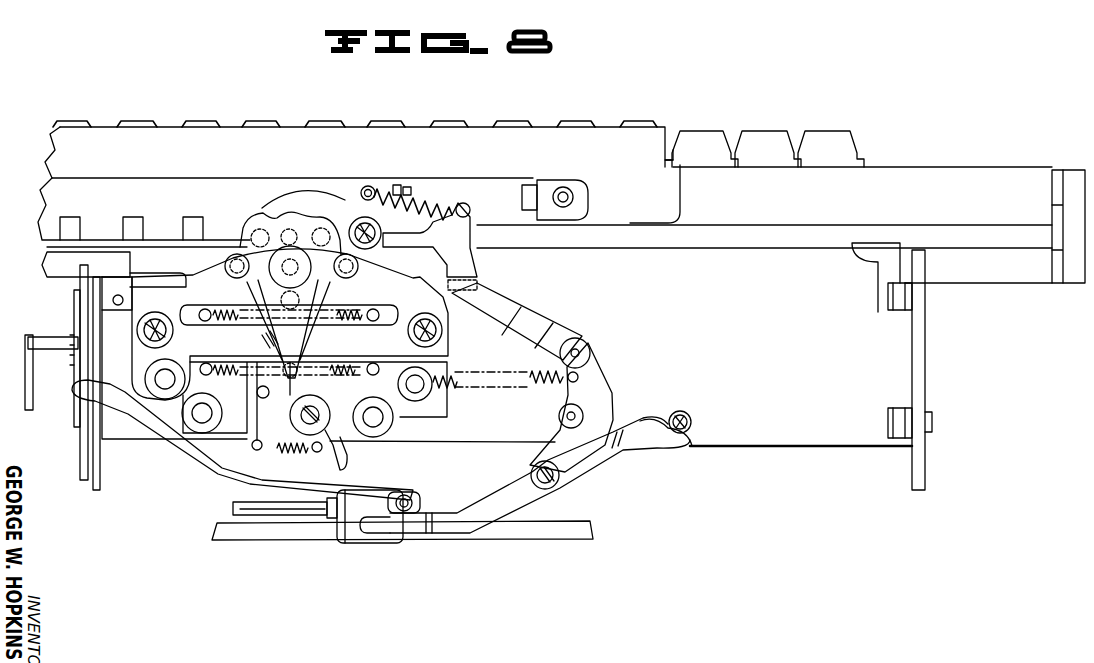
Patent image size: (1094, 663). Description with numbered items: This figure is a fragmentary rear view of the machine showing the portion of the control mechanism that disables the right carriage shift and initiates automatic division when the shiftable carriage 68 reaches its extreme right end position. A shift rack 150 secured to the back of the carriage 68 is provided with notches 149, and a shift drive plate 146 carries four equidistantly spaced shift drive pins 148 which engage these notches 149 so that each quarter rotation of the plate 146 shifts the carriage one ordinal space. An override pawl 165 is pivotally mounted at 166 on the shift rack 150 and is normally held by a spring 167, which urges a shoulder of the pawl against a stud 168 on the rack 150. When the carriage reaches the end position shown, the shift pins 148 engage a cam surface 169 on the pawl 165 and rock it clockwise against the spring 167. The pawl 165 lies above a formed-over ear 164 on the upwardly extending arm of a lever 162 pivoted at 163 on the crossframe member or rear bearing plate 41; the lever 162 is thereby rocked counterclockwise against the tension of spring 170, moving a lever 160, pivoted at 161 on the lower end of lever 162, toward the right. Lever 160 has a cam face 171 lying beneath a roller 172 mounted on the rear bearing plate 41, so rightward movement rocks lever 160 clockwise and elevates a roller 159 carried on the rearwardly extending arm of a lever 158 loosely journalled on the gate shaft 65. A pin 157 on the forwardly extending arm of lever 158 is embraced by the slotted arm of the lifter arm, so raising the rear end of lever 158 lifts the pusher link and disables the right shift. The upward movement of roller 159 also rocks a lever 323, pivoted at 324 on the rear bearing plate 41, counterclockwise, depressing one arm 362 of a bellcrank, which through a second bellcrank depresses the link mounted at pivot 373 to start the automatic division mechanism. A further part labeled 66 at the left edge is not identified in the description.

The shiftable carriage 68 is at (688, 130).
The shift rack 150 is at (112, 193).
The notches 149 is at (185, 226).
The shift drive plate 146 is at (245, 230).
The shift drive pins 148 is at (264, 236).
The cam surface 169 is at (310, 230).
The pawl pivot 166 is at (365, 216).
The stud 168 is at (378, 192).
The spring 167 is at (445, 205).
The override pawl 165 is at (470, 232).
The formed-over ear 164 is at (470, 286).
The lever pivot 163 is at (578, 352).
The lever 162 is at (596, 397).
The spring 170 is at (548, 390).
The roller 172 is at (688, 415).
The cam face 171 is at (662, 427).
The rear bearing plate 41 is at (785, 438).
The link pivot 373 is at (47, 336).
The side plate 66 is at (30, 392).
The bellcrank arm 362 is at (80, 416).
The lever 323 is at (192, 445).
The lever pivot 324 is at (302, 440).
The roller 159 is at (418, 492).
The lever pivot 161 is at (535, 472).
The lever 160 is at (525, 490).
The pin 157 is at (235, 507).
The lever 158 is at (348, 535).
The gate shaft 65 is at (520, 532).